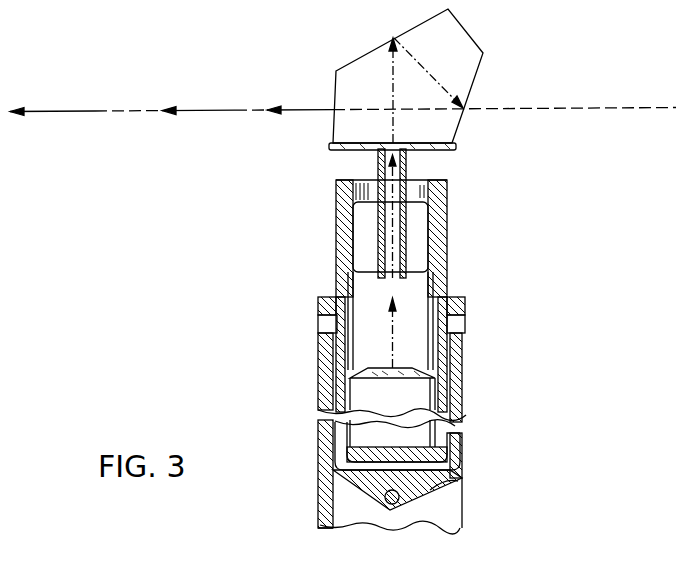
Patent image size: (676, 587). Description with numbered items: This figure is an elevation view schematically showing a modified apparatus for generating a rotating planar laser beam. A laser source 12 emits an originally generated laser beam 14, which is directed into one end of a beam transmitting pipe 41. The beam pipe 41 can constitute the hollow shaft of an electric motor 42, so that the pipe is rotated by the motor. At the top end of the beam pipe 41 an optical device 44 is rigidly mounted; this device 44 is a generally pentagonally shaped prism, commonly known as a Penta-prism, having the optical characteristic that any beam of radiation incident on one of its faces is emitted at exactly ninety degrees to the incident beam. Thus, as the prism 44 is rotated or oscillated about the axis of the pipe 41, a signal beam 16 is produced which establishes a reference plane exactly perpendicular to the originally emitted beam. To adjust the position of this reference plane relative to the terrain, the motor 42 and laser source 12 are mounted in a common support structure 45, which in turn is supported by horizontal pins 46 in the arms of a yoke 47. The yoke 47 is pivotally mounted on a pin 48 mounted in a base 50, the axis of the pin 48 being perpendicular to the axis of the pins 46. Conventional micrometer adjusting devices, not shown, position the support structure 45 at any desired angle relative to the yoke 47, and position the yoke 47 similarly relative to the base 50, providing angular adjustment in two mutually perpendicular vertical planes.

The laser source 12 is at (466, 414).
The laser beam 14 is at (433, 297).
The signal beam 16 is at (197, 110).
The beam transmitting pipe 41 is at (406, 163).
The electric motor 42 is at (435, 246).
The optical device 44 is at (461, 59).
The support structure 45 is at (435, 395).
The horizontal pins 46 is at (466, 322).
The yoke 47 is at (427, 489).
The pin 48 is at (380, 500).
The base 50 is at (330, 507).